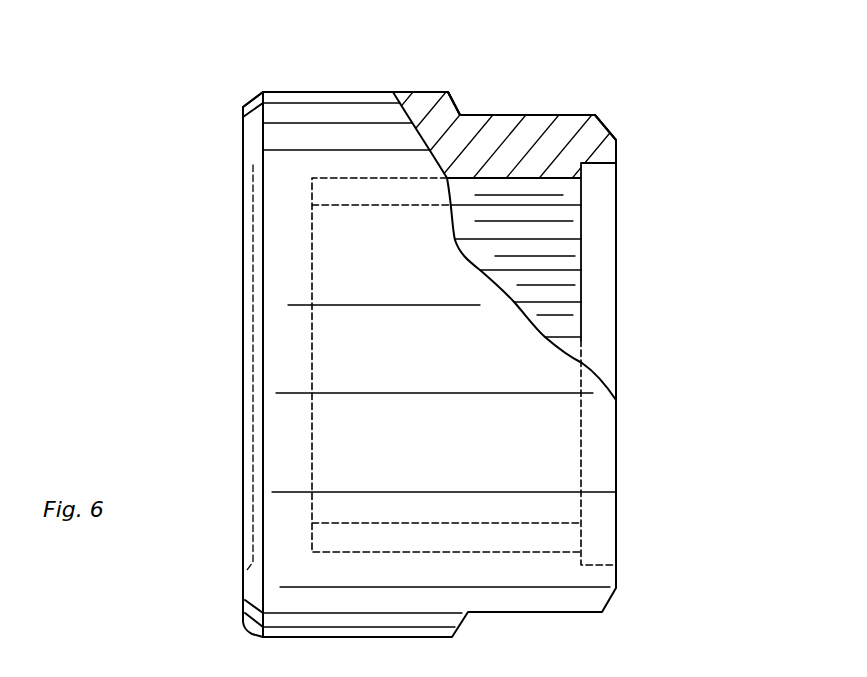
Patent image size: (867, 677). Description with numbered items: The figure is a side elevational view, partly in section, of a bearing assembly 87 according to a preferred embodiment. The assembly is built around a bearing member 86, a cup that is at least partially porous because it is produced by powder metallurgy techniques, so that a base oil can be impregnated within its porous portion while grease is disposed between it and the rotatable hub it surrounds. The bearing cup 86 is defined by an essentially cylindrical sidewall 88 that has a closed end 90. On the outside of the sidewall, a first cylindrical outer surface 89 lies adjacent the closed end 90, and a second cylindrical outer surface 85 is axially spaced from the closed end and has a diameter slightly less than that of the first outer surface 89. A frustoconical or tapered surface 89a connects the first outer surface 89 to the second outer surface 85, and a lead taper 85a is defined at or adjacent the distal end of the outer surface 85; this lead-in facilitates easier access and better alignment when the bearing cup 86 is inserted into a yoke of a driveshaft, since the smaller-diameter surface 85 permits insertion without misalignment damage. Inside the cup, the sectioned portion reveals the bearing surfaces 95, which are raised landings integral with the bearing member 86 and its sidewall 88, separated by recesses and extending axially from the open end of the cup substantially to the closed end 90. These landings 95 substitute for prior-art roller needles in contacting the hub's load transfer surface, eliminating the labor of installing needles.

The bearing assembly 87 is at (106, 124).
The bearing member 86 is at (283, 78).
The cylindrical sidewall 88 is at (330, 195).
The first cylindrical outer surface 89 is at (428, 96).
The frustoconical tapered surface 89a is at (458, 105).
The second cylindrical outer surface 85 is at (512, 115).
The lead taper 85a is at (605, 125).
The closed end 90 is at (242, 330).
The bearing surfaces 95 is at (518, 220).